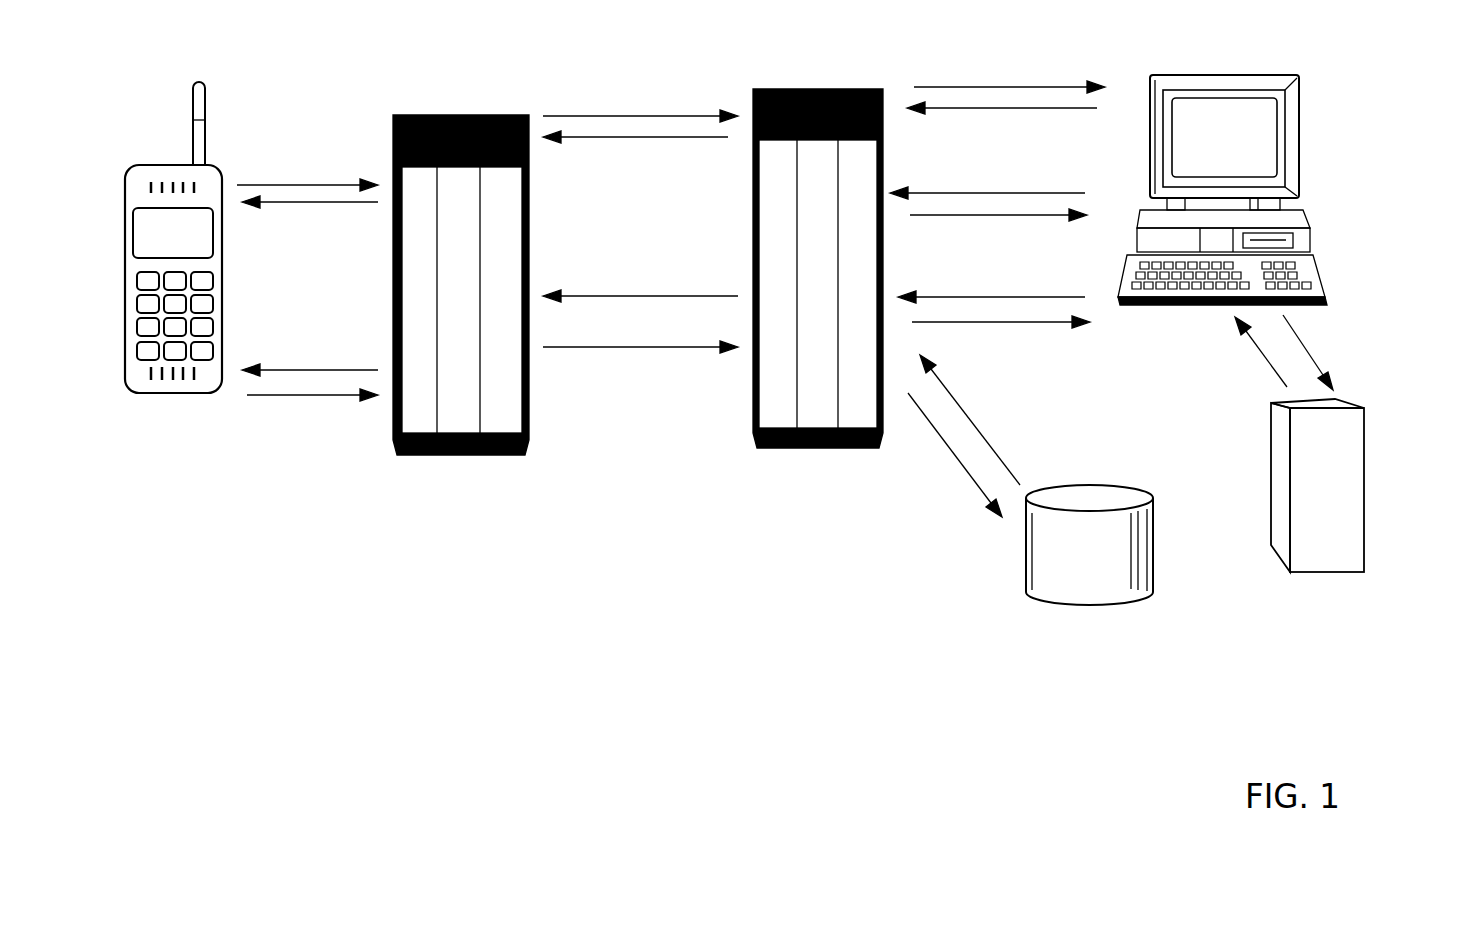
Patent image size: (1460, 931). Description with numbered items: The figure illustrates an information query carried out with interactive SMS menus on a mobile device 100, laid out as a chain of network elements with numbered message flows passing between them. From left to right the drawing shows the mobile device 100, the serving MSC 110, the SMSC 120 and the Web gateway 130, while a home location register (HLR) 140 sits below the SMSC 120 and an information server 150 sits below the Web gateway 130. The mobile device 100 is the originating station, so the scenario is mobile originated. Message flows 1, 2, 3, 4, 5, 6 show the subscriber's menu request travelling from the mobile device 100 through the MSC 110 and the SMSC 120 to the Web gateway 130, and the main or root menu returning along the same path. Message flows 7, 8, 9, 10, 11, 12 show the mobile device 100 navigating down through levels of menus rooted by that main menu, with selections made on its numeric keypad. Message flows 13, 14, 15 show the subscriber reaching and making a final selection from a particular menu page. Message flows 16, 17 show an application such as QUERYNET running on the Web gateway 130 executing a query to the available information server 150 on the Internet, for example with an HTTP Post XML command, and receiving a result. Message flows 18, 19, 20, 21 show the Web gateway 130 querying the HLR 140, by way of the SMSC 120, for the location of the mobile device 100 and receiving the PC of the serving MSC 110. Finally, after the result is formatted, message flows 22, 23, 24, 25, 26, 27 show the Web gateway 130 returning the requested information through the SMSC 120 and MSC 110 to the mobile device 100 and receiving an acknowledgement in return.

The mobile device 100 is at (140, 165).
The MSC 110 is at (418, 115).
The SMSC 120 is at (781, 89).
The Web gateway 130 is at (1253, 75).
The home location register (HLR) 140 is at (1080, 608).
The information server 150 is at (1364, 512).
The message flow 1 is at (307, 175).
The message flow 2 is at (640, 105).
The message flow 3 is at (1009, 76).
The message flow 4 is at (1002, 117).
The message flow 5 is at (635, 148).
The message flow 6 is at (310, 212).
The message flow 7 is at (307, 175).
The message flow 8 is at (640, 105).
The message flow 9 is at (1009, 76).
The message flow 10 is at (1002, 117).
The message flow 11 is at (635, 148).
The message flow 12 is at (310, 212).
The message flow 13 is at (307, 175).
The message flow 14 is at (640, 105).
The message flow 15 is at (1009, 76).
The message flow 16 is at (1311, 352).
The message flow 17 is at (1259, 352).
The message flow 18 is at (987, 182).
The message flow 19 is at (955, 455).
The message flow 20 is at (970, 420).
The message flow 21 is at (998, 225).
The message flow 22 is at (991, 288).
The message flow 23 is at (640, 284).
The message flow 24 is at (310, 359).
The message flow 25 is at (312, 405).
The message flow 26 is at (640, 336).
The message flow 27 is at (1001, 332).